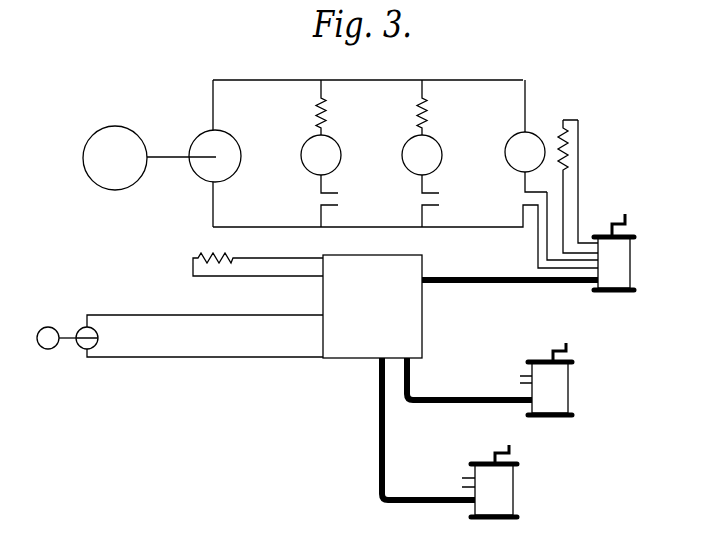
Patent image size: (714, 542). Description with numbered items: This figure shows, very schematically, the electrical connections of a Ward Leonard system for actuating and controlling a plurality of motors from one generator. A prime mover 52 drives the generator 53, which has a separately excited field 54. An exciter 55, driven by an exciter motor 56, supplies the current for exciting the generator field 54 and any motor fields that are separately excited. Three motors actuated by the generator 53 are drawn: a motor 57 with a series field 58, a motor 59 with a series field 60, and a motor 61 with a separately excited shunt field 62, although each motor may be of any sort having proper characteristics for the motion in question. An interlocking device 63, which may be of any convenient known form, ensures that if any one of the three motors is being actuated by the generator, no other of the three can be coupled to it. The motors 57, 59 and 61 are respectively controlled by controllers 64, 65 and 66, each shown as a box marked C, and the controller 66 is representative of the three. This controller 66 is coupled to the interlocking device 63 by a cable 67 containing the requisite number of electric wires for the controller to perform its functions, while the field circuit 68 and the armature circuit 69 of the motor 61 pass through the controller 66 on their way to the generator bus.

The prime mover 52 is at (113, 137).
The generator 53 is at (220, 142).
The separately excited field 54 is at (210, 254).
The exciter 55 is at (118, 356).
The exciter motor 56 is at (49, 327).
The motor 57 is at (334, 147).
The series field 58 is at (324, 110).
The motor 59 is at (430, 150).
The series field 60 is at (427, 115).
The motor 61 is at (527, 143).
The separately excited shunt field 62 is at (570, 145).
The interlocking device 63 is at (348, 339).
The controller 64 is at (500, 481).
The controller 65 is at (553, 384).
The controller 66 is at (617, 258).
The cable 67 is at (510, 285).
The field circuit 68 is at (577, 193).
The armature circuit 69 is at (540, 234).